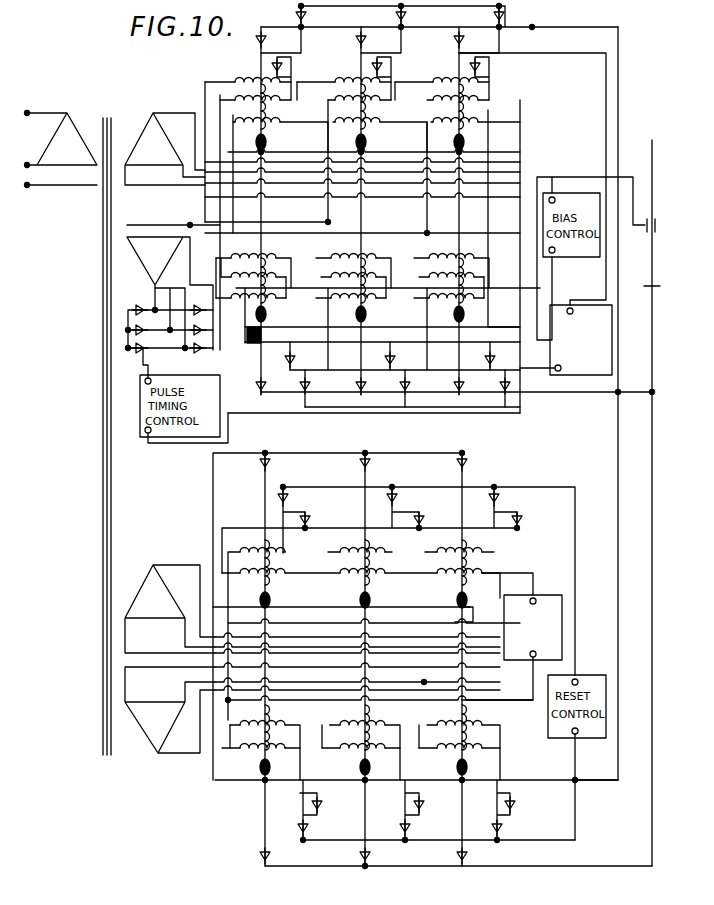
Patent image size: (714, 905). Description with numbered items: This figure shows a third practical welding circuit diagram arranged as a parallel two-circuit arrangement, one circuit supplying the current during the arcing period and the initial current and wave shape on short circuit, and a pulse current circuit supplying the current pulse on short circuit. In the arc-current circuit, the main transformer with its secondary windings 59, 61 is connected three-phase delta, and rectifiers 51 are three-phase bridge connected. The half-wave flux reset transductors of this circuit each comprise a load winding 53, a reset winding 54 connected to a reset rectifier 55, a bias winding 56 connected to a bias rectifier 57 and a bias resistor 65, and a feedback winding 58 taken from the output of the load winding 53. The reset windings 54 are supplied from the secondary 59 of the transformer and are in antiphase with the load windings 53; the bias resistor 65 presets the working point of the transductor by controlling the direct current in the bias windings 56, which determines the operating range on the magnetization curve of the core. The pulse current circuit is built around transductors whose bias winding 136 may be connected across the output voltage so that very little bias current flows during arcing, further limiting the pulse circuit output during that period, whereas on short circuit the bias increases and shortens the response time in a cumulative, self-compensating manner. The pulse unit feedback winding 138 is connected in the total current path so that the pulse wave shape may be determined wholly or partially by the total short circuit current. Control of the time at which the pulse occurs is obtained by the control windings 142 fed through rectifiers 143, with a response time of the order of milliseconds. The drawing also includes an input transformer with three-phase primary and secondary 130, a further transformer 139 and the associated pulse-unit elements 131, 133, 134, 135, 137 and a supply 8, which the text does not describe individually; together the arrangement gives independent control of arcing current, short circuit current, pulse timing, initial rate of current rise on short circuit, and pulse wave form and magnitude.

The battery 8 is at (651, 503).
The input transformer 130 is at (115, 424).
The diode 131 is at (379, 210).
The winding 133 is at (347, 72).
The winding 134 is at (365, 102).
The diode 135 is at (368, 77).
The bias winding 136 is at (376, 118).
The diode 137 is at (387, 16).
The pulse unit feedback winding 138 is at (361, 144).
The transformer 139 is at (166, 287).
The control windings 142 is at (316, 203).
The rectifiers 143 is at (170, 341).
The rectifiers 51 is at (352, 463).
The load winding 53 is at (357, 560).
The reset winding 54 is at (265, 560).
The reset rectifier 55 is at (388, 496).
The bias winding 56 is at (480, 572).
The bias rectifier 57 is at (411, 521).
The feedback winding 58 is at (372, 605).
The secondary winding 59 is at (166, 710).
The secondary winding 61 is at (166, 609).
The bias resistor 65 is at (533, 617).